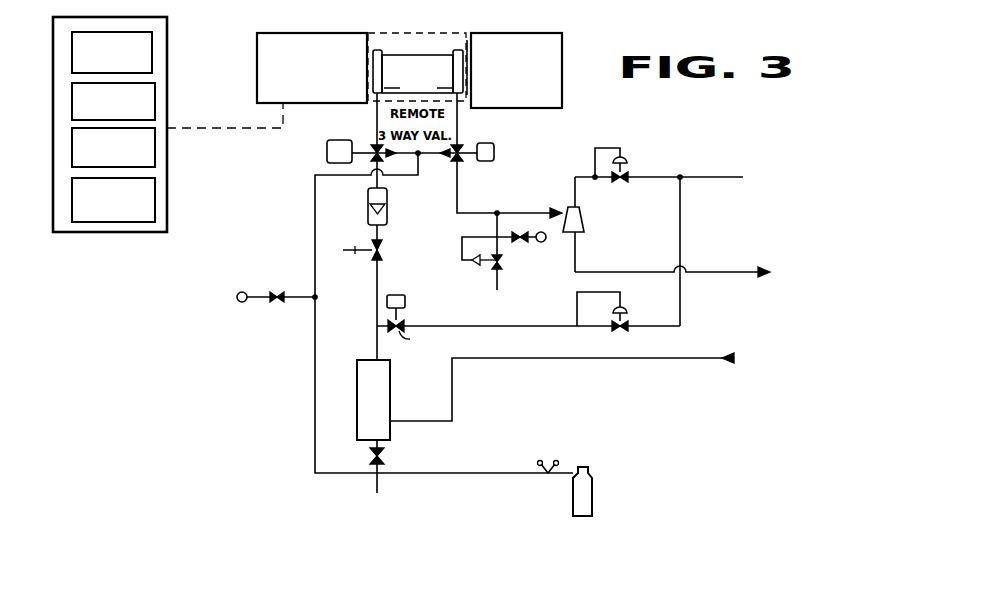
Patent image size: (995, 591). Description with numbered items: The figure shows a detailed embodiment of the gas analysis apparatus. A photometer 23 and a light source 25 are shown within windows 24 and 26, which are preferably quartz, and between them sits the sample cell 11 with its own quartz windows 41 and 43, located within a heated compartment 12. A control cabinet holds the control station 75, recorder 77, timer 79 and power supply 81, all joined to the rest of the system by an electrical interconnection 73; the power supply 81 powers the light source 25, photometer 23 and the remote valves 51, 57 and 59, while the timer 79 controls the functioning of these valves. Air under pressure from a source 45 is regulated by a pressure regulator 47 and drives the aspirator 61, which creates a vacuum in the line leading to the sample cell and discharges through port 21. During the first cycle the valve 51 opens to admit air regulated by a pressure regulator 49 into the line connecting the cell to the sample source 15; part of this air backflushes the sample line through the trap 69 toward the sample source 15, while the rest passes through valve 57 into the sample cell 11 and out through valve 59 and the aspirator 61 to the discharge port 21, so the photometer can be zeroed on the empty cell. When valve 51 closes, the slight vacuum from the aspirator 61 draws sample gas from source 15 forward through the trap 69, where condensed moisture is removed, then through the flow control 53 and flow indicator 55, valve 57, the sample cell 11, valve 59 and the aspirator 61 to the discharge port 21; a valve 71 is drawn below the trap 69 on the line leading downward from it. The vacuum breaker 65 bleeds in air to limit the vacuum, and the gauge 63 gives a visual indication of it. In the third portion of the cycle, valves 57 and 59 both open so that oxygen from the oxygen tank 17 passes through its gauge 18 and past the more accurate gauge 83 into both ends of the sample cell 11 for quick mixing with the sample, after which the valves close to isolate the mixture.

The sample cell 11 is at (388, 58).
The heated compartment 12 is at (417, 67).
The sample source 15 is at (732, 358).
The oxygen tank 17 is at (573, 497).
The gauge 18 is at (557, 460).
The discharge port 21 is at (770, 278).
The photometer 23 is at (314, 92).
The window 24 is at (370, 48).
The light source 25 is at (527, 101).
The window 26 is at (478, 52).
The window 41 is at (378, 50).
The window 43 is at (457, 50).
The air source 45 is at (743, 177).
The pressure regulator 47 is at (638, 142).
The pressure regulator 49 is at (626, 317).
The valve 51 is at (386, 323).
The flow control 53 is at (343, 250).
The flow indicator 55 is at (368, 200).
The valve 57 is at (327, 152).
The valve 59 is at (494, 152).
The aspirator 61 is at (584, 226).
The gauge 63 is at (546, 238).
The vacuum breaker 65 is at (483, 276).
The trap 69 is at (383, 418).
The drain valve 71 is at (372, 456).
The electrical interconnection 73 is at (236, 126).
The control station 75 is at (72, 52).
The recorder 77 is at (72, 108).
The timer 79 is at (72, 146).
The power supply 81 is at (72, 193).
The gauge 83 is at (244, 302).